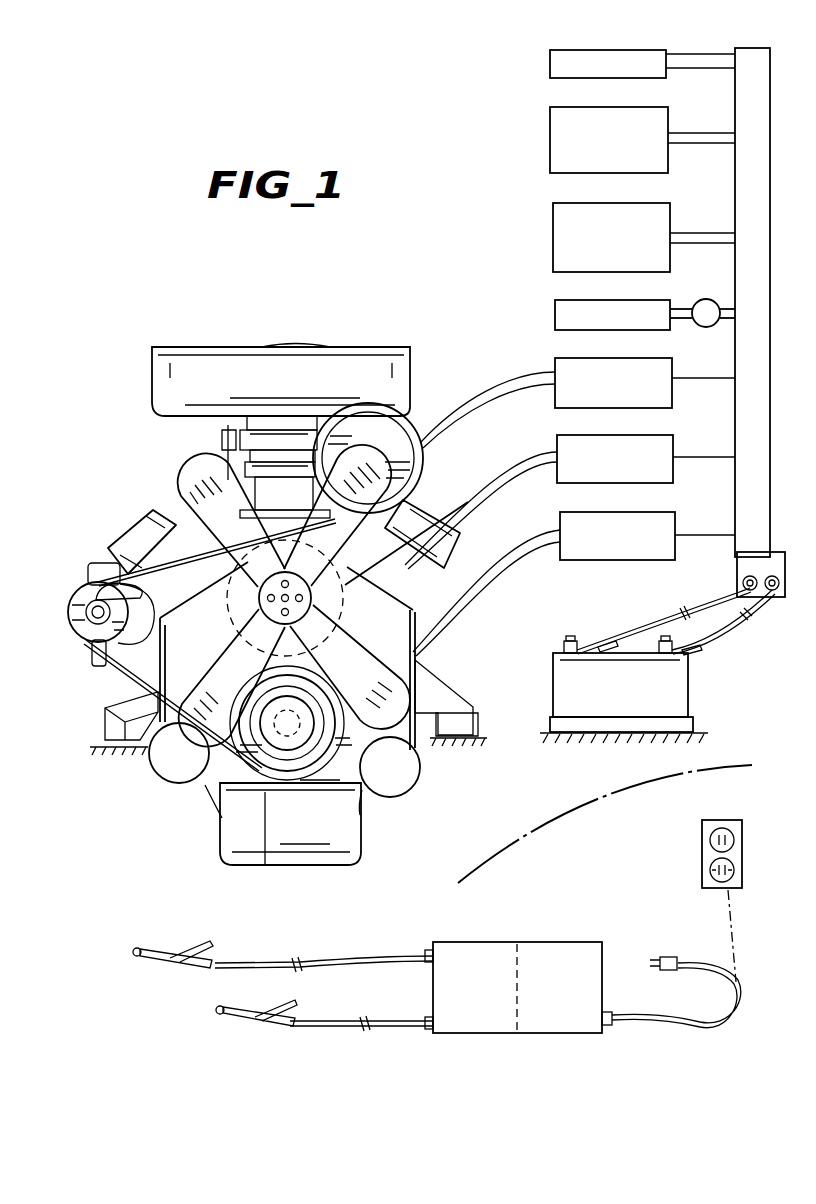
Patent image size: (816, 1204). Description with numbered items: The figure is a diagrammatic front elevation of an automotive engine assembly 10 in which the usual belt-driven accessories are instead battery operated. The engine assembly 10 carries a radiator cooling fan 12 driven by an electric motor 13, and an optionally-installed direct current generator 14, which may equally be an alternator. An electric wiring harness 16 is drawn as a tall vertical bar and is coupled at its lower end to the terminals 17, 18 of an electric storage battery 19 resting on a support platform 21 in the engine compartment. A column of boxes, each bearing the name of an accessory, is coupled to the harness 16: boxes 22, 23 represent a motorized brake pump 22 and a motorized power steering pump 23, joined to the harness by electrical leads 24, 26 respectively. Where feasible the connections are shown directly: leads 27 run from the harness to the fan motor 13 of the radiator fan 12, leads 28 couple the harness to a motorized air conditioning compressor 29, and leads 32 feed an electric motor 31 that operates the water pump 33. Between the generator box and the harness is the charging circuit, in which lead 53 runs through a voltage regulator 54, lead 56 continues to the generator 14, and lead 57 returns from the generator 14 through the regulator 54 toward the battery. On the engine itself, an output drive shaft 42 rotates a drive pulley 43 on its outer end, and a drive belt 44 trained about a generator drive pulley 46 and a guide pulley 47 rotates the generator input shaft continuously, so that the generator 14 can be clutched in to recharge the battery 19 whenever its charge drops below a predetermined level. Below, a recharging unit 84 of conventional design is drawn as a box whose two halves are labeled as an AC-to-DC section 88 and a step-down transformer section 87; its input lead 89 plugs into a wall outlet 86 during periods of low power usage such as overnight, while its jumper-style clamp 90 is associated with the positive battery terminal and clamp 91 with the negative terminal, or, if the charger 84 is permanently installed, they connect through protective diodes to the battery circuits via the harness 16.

The engine assembly 10 is at (330, 308).
The radiator cooling fan 12 is at (190, 487).
The electric motor 13 is at (308, 620).
The direct current generator 14 is at (88, 642).
The electric wiring harness 16 is at (750, 53).
The battery terminal 17 is at (572, 656).
The battery terminal 18 is at (664, 656).
The electric storage battery 19 is at (553, 683).
The support platform 21 is at (693, 722).
The motorized brake pump 22 is at (550, 137).
The motorized power steering pump 23 is at (553, 233).
The electrical lead 24 is at (706, 138).
The electrical lead 26 is at (706, 238).
The electrical leads 27 is at (477, 498).
The leads 28 is at (475, 410).
The motorized air conditioning compressor 29 is at (424, 466).
The electric motor 31 is at (222, 816).
The leads 32 is at (478, 580).
The water pump 33 is at (273, 742).
The output drive shaft 42 is at (293, 767).
The drive pulley 43 is at (362, 812).
The drive belt 44 is at (178, 700).
The generator drive pulley 46 is at (88, 600).
The guide pulley 47 is at (286, 522).
The lead 53 is at (730, 308).
The voltage regulator 54 is at (716, 325).
The lead 56 is at (686, 308).
The lead 57 is at (686, 320).
The recharging unit 84 is at (537, 940).
The wall outlet 86 is at (705, 855).
The step down transformer 87 is at (540, 1031).
The AC to DC converter 88 is at (497, 1022).
The input lead 89 is at (685, 968).
The clamp 90 is at (188, 965).
The clamp 91 is at (272, 1025).